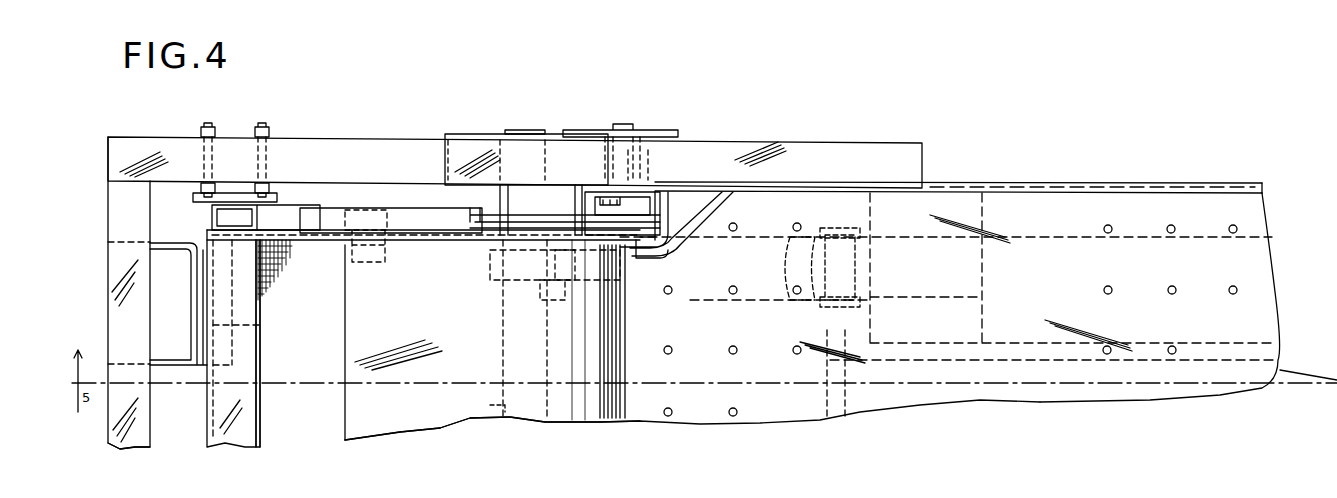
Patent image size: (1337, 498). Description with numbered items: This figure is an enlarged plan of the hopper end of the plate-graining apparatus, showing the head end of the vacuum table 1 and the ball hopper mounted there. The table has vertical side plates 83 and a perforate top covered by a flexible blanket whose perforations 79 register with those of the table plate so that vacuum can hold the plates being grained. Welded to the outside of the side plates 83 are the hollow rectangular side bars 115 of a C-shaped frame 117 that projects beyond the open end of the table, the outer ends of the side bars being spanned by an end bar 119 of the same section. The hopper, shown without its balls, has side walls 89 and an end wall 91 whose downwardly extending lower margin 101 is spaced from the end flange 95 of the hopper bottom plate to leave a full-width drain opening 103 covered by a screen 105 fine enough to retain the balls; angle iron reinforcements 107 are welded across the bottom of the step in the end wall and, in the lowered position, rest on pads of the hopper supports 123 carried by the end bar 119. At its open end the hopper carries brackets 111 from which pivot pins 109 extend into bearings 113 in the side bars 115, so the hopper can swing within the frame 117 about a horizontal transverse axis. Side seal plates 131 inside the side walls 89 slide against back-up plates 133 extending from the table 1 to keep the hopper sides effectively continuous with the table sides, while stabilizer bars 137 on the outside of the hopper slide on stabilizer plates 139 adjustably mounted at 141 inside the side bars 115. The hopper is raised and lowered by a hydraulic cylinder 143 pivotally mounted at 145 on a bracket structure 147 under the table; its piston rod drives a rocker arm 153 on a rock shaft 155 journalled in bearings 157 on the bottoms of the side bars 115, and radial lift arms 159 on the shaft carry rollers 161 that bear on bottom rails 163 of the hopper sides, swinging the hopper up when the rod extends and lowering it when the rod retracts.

The vacuum table 1 is at (1197, 180).
The perforations 79 is at (1112, 233).
The vertical side plates 83 is at (760, 191).
The side walls 89 is at (378, 241).
The end wall 91 is at (207, 421).
The end flange 95 is at (355, 432).
The lower margin 101 is at (259, 448).
The drain opening 103 is at (303, 445).
The screen 105 is at (345, 370).
The angle iron reinforcements 107 is at (240, 325).
The pivot pins 109 is at (625, 124).
The brackets 111 is at (578, 195).
The bearings 113 is at (640, 163).
The side bars 115 is at (322, 137).
The C-shaped frame 117 is at (114, 129).
The end bar 119 is at (135, 445).
The hopper supports 123 is at (165, 365).
The side seal plates 131 is at (640, 232).
The back-up plates 133 is at (662, 250).
The stabilizer bars 137 is at (212, 215).
The stabilizer plates 139 is at (285, 193).
The adjustable mounting 141 is at (262, 125).
The hydraulic cylinder 143 is at (690, 302).
The pivotal mounting 145 is at (848, 224).
The bracket structure 147 is at (985, 282).
The rocker arm 153 is at (505, 312).
The rock shaft 155 is at (526, 130).
The bearings 157 is at (476, 134).
The lift arms 159 is at (496, 258).
The rollers 161 is at (392, 190).
The bottom rails 163 is at (430, 208).